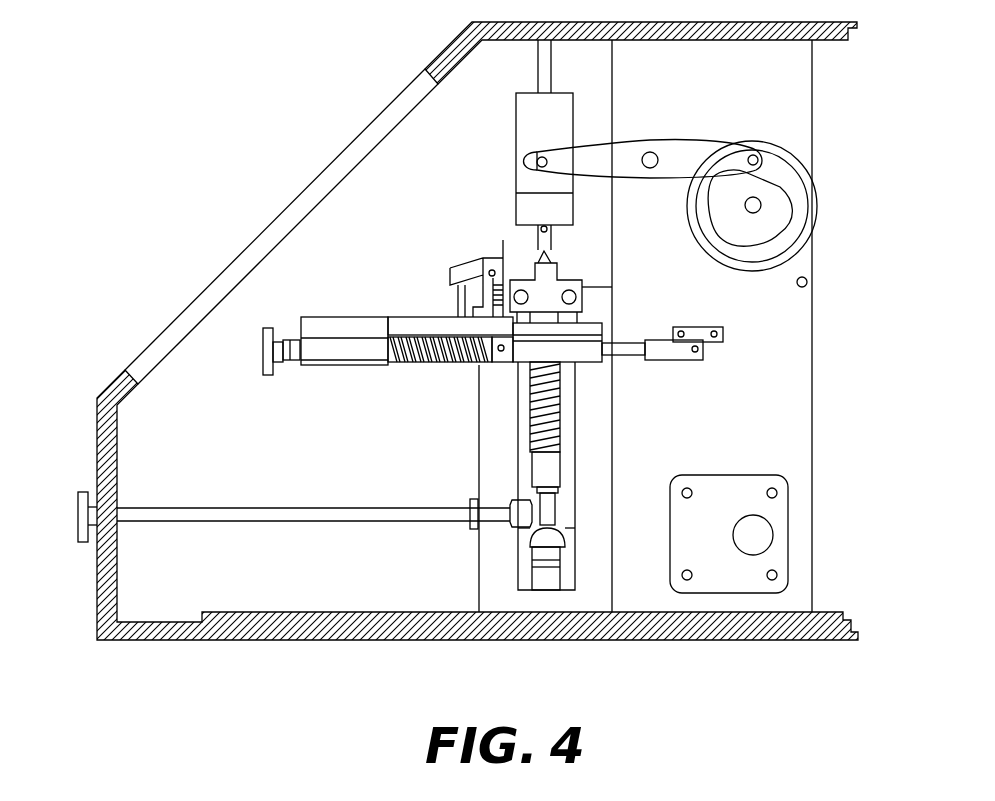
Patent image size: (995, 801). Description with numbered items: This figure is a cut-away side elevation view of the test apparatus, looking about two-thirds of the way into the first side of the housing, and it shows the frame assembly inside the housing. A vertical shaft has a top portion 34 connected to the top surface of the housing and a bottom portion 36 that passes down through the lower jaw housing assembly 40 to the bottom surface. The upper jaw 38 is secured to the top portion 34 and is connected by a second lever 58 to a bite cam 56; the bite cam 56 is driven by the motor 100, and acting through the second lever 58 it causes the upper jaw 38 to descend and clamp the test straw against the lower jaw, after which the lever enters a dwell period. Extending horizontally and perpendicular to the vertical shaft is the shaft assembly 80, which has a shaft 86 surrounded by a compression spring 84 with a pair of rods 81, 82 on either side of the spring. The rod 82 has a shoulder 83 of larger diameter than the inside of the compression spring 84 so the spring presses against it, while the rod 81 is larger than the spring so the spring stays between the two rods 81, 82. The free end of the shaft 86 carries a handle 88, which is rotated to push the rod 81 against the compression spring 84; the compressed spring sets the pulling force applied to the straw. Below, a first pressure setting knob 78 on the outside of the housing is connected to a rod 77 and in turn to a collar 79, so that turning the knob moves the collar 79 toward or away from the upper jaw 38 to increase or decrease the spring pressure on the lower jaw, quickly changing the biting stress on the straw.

The top portion 34 is at (535, 67).
The bottom portion 36 is at (545, 577).
The upper jaw 38 is at (537, 132).
The lower jaw housing assembly 40 is at (565, 417).
The bite cam 56 is at (814, 167).
The second lever 58 is at (692, 137).
The rod 77 is at (372, 508).
The first pressure setting knob 78 is at (78, 552).
The collar 79 is at (520, 516).
The shaft assembly 80 is at (366, 372).
The rod 81 is at (292, 360).
The rod 82 is at (630, 348).
The shoulder 83 is at (501, 352).
The compression spring 84 is at (441, 365).
The shaft 86 is at (273, 378).
The handle 88 is at (262, 328).
The motor 100 is at (795, 524).